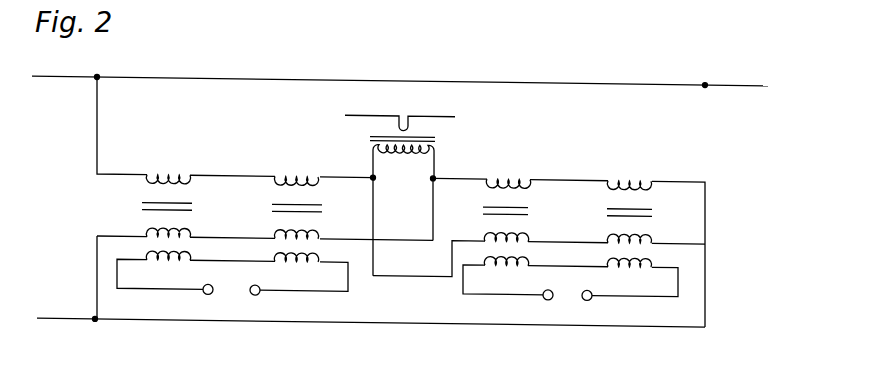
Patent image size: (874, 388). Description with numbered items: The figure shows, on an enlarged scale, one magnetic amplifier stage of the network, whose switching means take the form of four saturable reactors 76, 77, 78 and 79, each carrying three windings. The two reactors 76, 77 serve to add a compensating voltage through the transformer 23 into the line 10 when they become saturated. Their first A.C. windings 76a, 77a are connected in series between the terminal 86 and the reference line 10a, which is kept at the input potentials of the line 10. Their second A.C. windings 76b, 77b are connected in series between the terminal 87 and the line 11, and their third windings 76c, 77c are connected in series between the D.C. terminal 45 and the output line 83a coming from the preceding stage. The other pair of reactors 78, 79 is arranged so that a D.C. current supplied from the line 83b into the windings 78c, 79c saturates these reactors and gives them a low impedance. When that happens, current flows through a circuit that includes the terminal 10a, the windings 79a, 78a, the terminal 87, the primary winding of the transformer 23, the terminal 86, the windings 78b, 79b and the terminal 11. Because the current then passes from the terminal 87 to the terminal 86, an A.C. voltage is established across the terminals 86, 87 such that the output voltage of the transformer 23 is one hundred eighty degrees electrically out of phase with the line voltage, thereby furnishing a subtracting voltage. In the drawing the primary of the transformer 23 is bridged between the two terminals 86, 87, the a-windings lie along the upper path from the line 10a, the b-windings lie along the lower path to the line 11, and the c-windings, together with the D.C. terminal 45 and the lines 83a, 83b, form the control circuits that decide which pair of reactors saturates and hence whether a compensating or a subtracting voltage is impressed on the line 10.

The line 10 is at (370, 111).
The reference line 10a is at (720, 77).
The line 11 is at (116, 322).
The transformer 23 is at (443, 136).
The D.C. terminal 45 is at (204, 293).
The saturable reactor 76 is at (196, 206).
The first A.C. winding 76a is at (173, 171).
The second A.C. winding 76b is at (148, 231).
The third winding 76c is at (170, 266).
The saturable reactor 77 is at (324, 207).
The first A.C. winding 77a is at (303, 172).
The second A.C. winding 77b is at (318, 235).
The third winding 77c is at (306, 261).
The saturable reactor 78 is at (482, 210).
The winding 78a is at (517, 171).
The winding 78b is at (528, 235).
The winding 78c is at (494, 261).
The saturable reactor 79 is at (660, 209).
The winding 79a is at (640, 171).
The winding 79b is at (652, 236).
The winding 79c is at (614, 261).
The output line 83a is at (256, 293).
The line 83b is at (590, 294).
The terminal 86 is at (372, 175).
The terminal 87 is at (435, 173).